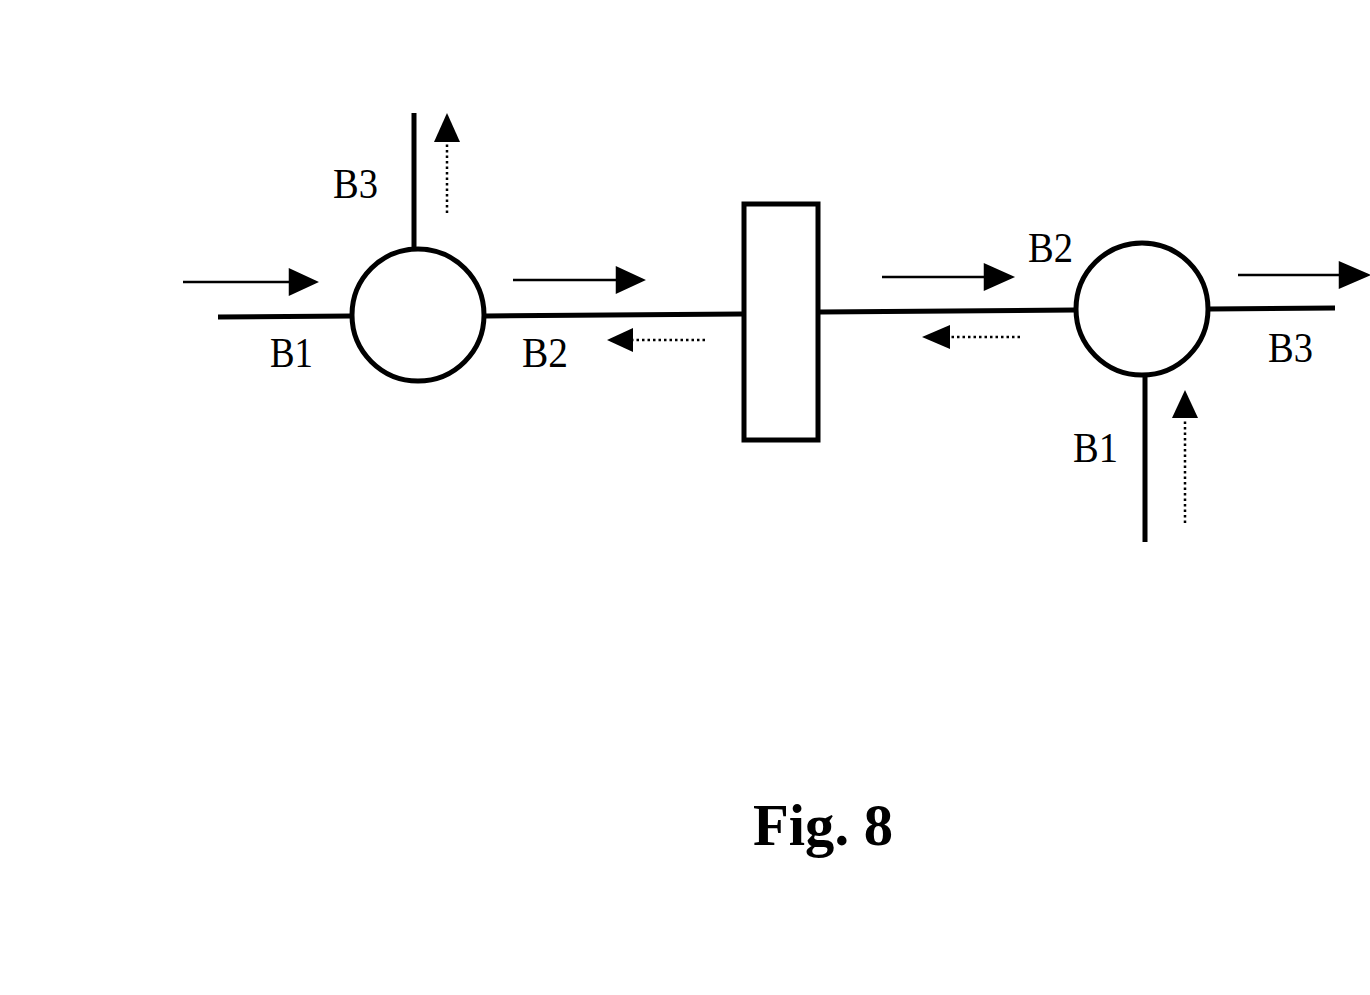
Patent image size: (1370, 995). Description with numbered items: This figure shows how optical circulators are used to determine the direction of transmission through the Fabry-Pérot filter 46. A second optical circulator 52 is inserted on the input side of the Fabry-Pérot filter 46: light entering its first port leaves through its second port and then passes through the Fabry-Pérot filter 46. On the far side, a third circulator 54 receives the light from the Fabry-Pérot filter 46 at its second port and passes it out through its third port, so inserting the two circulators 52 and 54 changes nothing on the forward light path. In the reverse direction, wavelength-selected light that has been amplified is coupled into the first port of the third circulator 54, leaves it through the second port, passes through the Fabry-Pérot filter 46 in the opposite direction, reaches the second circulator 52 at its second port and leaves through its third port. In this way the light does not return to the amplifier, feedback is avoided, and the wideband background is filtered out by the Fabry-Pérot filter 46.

The Fabry-Pérot filter 46 is at (788, 223).
The second optical circulator 52 is at (405, 355).
The third circulator 54 is at (1127, 275).